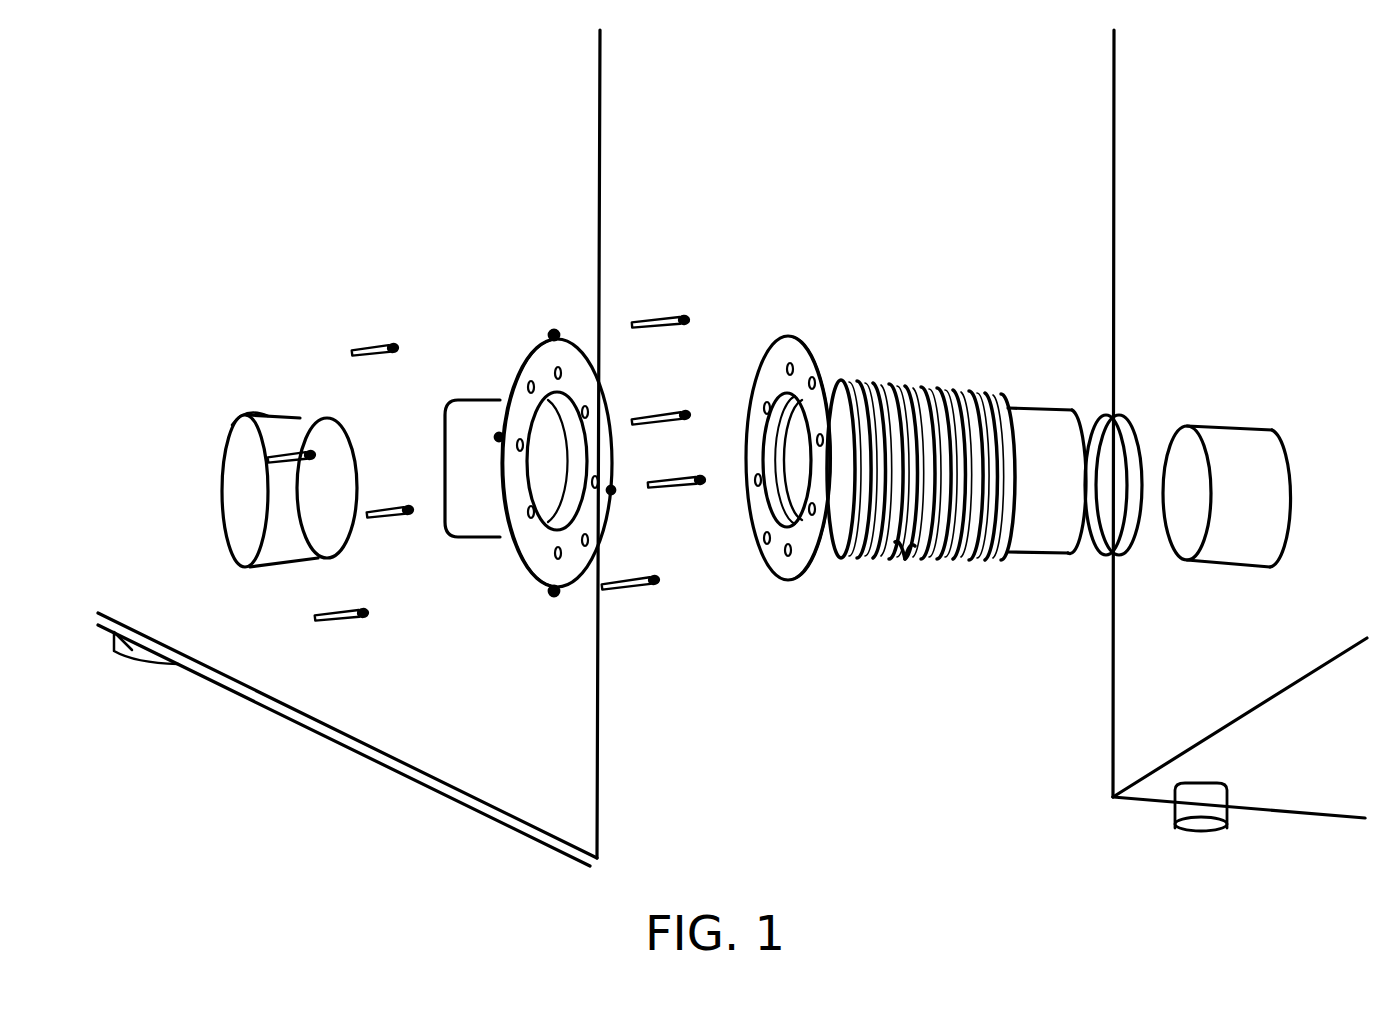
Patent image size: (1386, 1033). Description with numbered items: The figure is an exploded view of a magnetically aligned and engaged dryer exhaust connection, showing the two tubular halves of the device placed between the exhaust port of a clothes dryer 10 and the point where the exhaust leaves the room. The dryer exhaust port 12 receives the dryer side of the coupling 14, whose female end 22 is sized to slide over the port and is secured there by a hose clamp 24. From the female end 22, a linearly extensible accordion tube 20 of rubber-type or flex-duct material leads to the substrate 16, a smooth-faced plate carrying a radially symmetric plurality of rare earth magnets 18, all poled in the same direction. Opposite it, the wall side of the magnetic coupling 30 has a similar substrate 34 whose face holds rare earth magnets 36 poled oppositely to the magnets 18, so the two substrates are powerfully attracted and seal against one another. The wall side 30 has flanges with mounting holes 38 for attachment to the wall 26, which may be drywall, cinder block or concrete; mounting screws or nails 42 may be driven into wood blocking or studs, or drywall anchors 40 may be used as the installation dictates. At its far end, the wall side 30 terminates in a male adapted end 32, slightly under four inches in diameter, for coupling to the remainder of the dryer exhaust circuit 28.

The clothes dryer 10 is at (1110, 210).
The dryer exhaust port 12 is at (1245, 473).
The dryer side of the coupling 14 is at (921, 474).
The substrate of the dryer half of the coupling 16 is at (792, 441).
The rare earth magnets 18 is at (787, 369).
The accordion tube 20 is at (908, 548).
The female end 22 is at (1050, 440).
The hose clamp 24 is at (1093, 540).
The wall 26 is at (388, 784).
The remainder of the dryer exhaust circuit 28 is at (282, 432).
The wall side of the magnetic coupling 30 is at (551, 441).
The male adapted end 32 is at (472, 448).
The substrate 34 is at (543, 538).
The rare earth magnets 36 is at (562, 373).
The mounting holes 38 is at (548, 330).
The drywall anchors 40 is at (382, 354).
The mounting screws or nails 42 is at (658, 418).